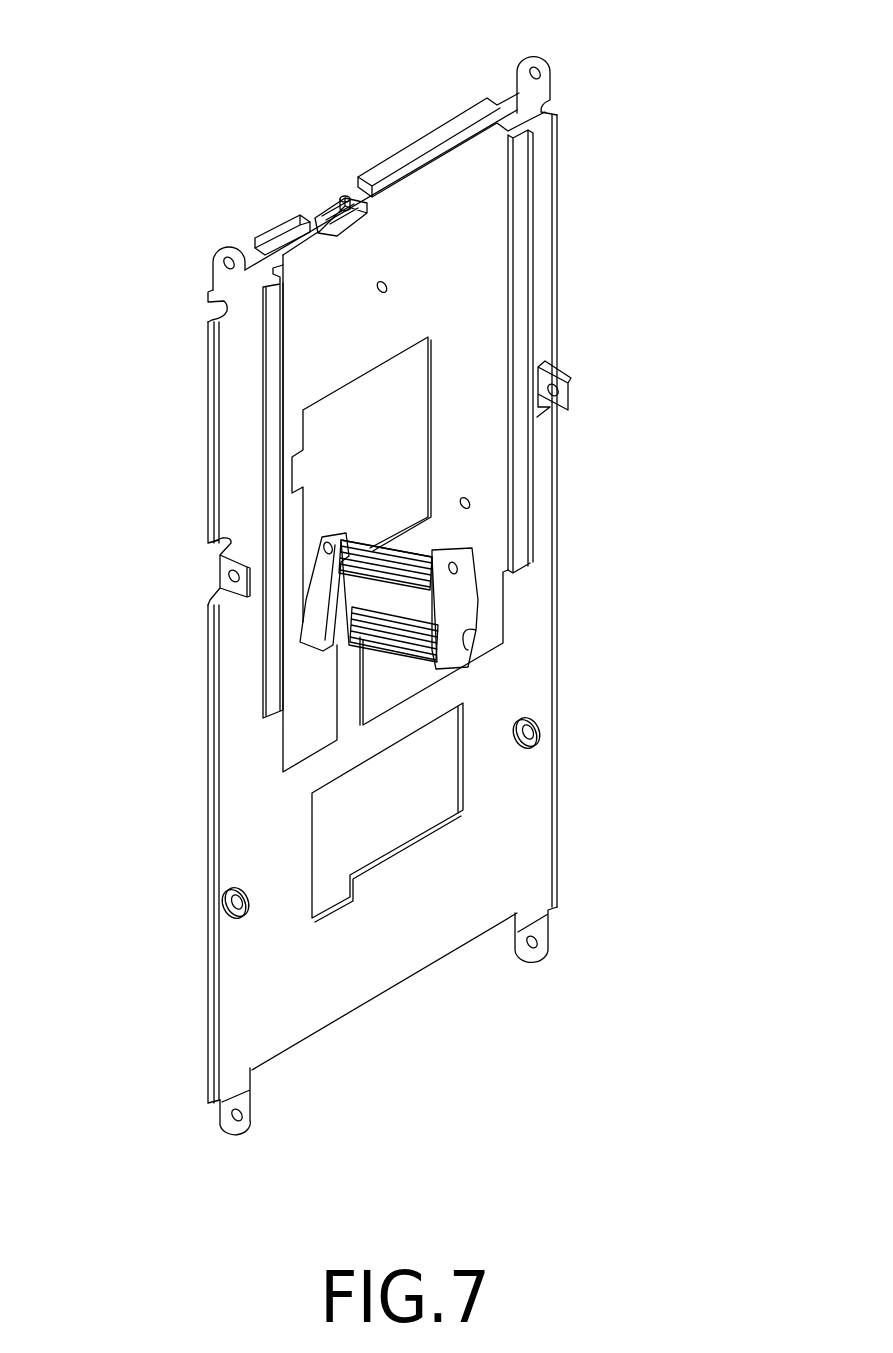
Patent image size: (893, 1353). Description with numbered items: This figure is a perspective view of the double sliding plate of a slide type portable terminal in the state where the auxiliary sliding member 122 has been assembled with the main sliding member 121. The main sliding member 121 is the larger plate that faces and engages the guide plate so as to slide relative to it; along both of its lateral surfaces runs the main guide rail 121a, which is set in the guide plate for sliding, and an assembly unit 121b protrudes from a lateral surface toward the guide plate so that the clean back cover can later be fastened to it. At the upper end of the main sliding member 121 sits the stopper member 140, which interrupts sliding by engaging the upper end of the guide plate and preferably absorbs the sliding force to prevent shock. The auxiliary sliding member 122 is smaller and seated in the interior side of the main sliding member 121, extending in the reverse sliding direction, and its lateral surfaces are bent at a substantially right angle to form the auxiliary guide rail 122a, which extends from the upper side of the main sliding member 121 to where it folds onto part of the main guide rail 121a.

The main sliding member 121 is at (541, 825).
The main guide rail 121a is at (560, 667).
The assembly unit 121b is at (574, 385).
The auxiliary sliding member 122 is at (463, 175).
The auxiliary guide rail 122a is at (528, 528).
The stopper member 140 is at (338, 196).